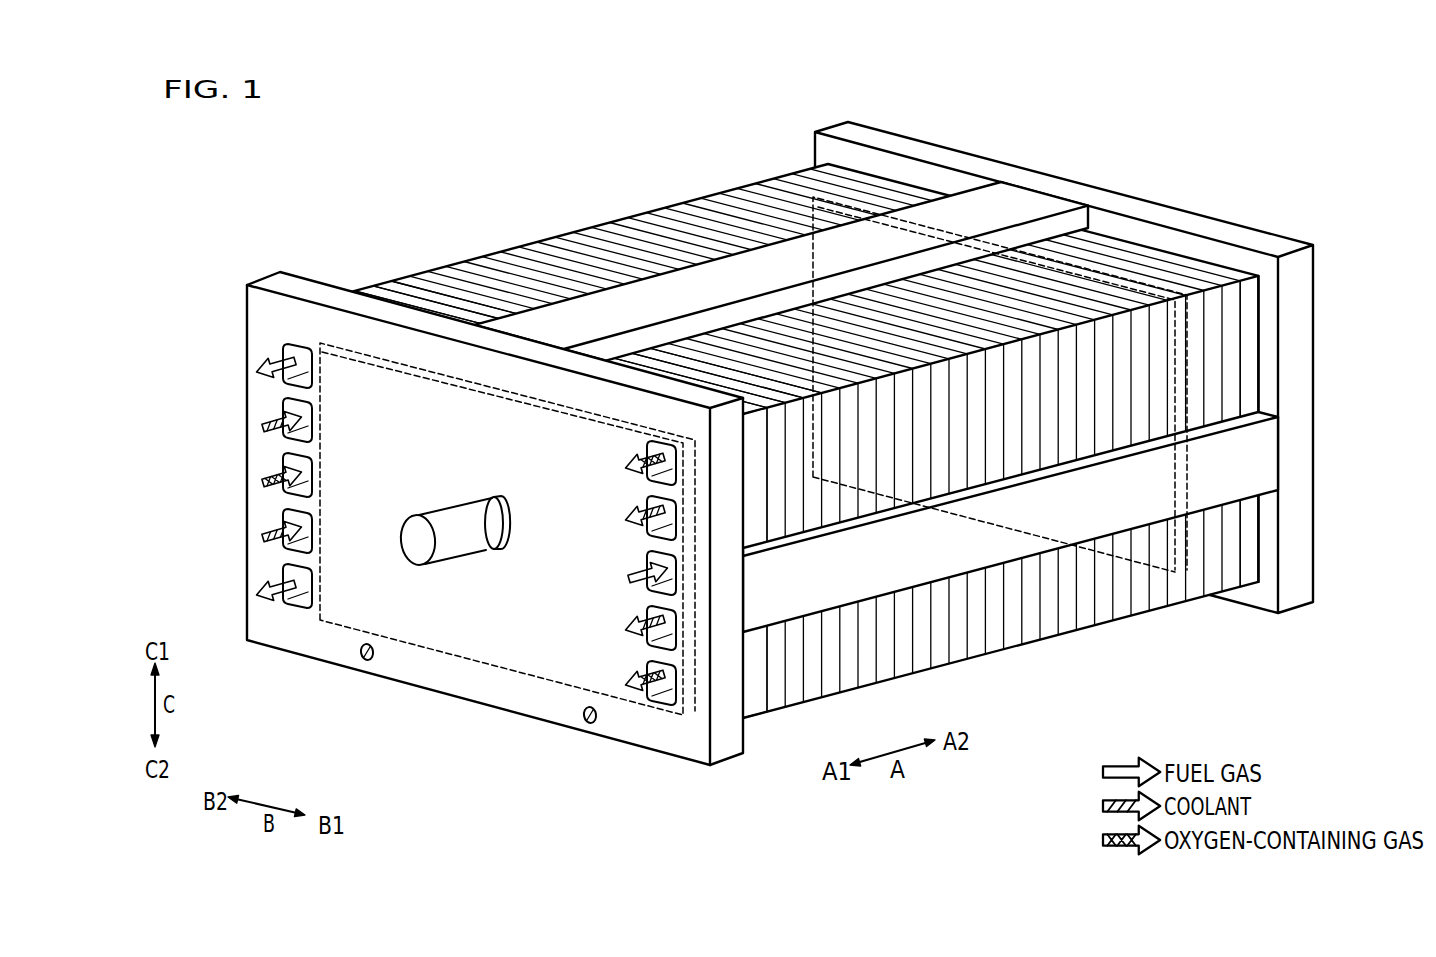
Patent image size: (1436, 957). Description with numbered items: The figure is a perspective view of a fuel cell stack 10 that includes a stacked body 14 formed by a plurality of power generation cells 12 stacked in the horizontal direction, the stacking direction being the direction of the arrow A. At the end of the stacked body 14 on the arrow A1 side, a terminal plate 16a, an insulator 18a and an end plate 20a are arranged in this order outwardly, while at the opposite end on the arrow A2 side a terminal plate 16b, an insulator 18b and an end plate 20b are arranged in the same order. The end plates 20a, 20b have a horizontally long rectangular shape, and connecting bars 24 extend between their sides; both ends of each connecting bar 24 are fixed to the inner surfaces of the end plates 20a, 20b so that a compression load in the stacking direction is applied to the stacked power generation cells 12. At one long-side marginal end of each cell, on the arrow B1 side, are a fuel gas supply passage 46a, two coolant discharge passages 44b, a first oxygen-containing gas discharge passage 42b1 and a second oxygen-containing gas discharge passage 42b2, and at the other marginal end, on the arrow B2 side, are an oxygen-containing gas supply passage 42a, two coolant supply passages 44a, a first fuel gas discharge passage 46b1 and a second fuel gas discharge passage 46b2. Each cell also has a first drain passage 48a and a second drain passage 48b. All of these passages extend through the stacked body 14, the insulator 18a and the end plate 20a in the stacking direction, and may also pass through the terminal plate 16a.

The fuel cell stack 10 is at (380, 167).
The power generation cell 12 is at (590, 233).
The stacked body 14 is at (595, 182).
The terminal plate 16a is at (497, 668).
The terminal plate 16b is at (1190, 372).
The insulator 18a is at (756, 726).
The insulator 18b is at (1262, 570).
The end plate 20a is at (430, 684).
The end plate 20b is at (1327, 291).
The connecting bar 24 is at (1033, 205).
The oxygen-containing gas supply passage 42a is at (285, 459).
The first oxygen-containing gas discharge passage 42b1 is at (647, 447).
The second oxygen-containing gas discharge passage 42b2 is at (647, 668).
The coolant supply passage 44a is at (285, 404).
The coolant discharge passage 44b is at (647, 502).
The fuel gas supply passage 46a is at (647, 557).
The first fuel gas discharge passage 46b1 is at (285, 350).
The second fuel gas discharge passage 46b2 is at (285, 570).
The first drain passage 48a is at (586, 723).
The second drain passage 48b is at (362, 661).